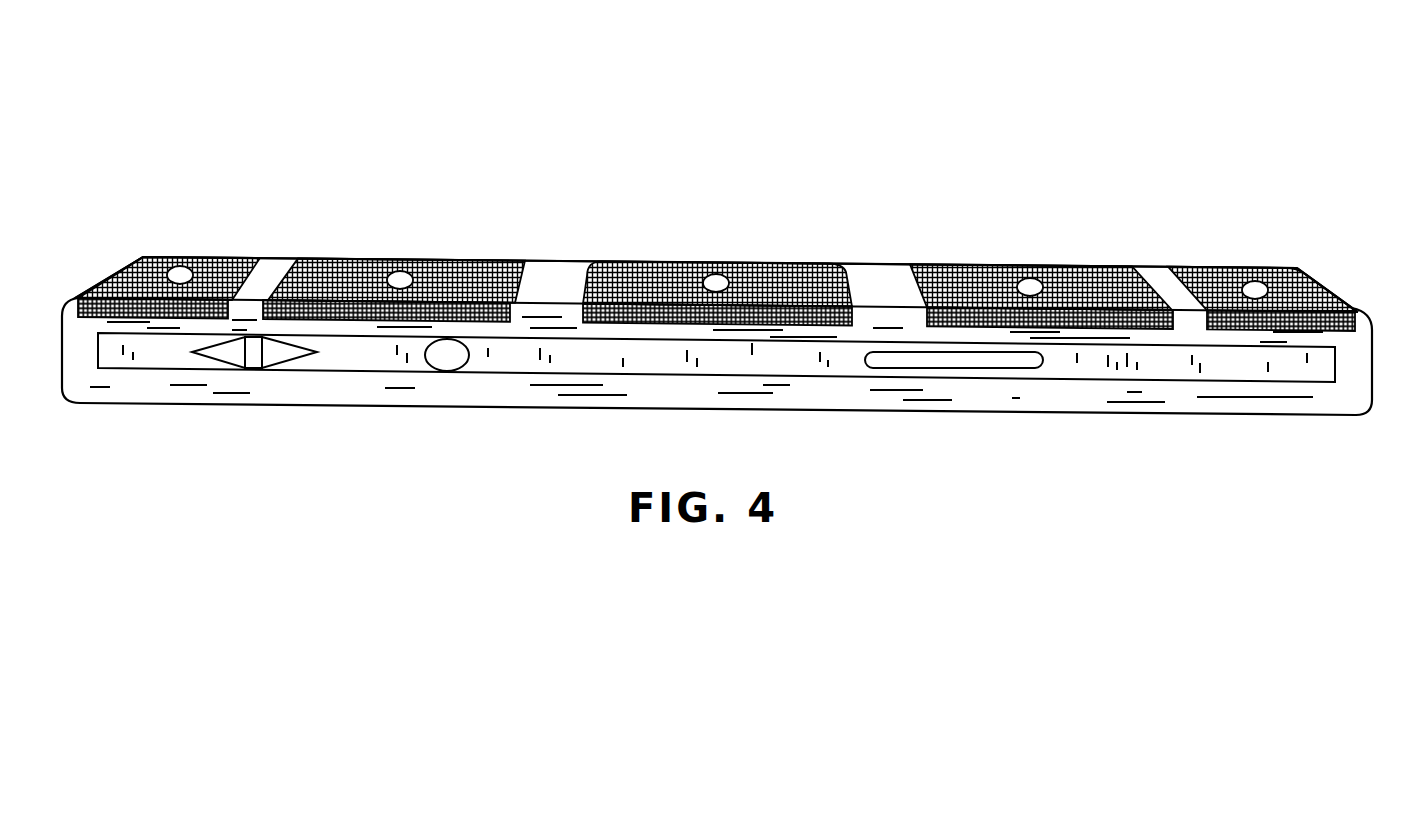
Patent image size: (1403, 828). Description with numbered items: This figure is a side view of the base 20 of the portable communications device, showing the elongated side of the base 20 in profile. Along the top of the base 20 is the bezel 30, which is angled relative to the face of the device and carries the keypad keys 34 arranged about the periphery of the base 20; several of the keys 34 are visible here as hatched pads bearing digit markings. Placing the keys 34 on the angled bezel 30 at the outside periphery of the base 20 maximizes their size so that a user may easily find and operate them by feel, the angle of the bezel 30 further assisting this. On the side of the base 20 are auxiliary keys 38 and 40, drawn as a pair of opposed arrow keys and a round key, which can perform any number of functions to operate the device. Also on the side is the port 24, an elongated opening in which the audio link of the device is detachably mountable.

The base 20 is at (1018, 145).
The bezel 30 is at (558, 285).
The keys 34 is at (233, 257).
The auxiliary keys 38 is at (280, 357).
The auxiliary keys 40 is at (440, 372).
The port 24 is at (933, 372).